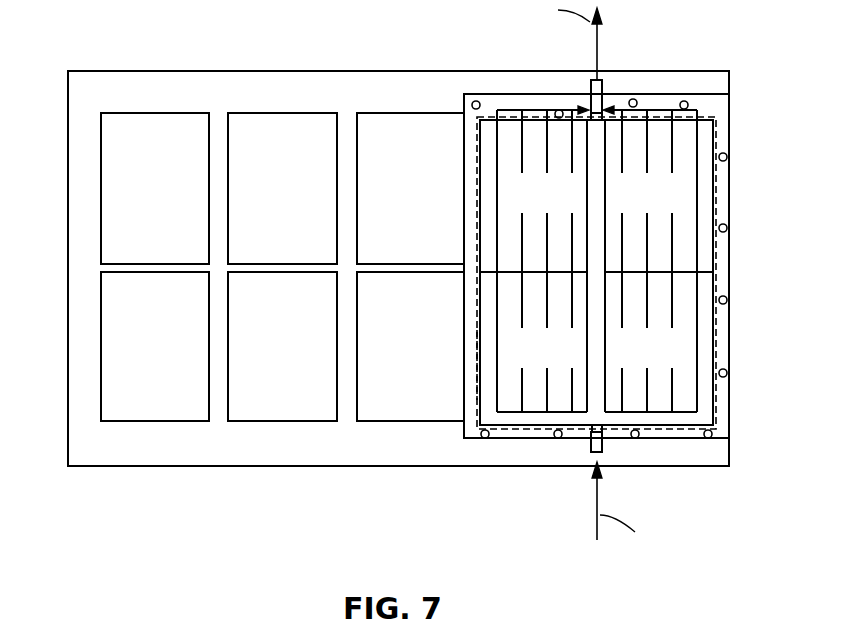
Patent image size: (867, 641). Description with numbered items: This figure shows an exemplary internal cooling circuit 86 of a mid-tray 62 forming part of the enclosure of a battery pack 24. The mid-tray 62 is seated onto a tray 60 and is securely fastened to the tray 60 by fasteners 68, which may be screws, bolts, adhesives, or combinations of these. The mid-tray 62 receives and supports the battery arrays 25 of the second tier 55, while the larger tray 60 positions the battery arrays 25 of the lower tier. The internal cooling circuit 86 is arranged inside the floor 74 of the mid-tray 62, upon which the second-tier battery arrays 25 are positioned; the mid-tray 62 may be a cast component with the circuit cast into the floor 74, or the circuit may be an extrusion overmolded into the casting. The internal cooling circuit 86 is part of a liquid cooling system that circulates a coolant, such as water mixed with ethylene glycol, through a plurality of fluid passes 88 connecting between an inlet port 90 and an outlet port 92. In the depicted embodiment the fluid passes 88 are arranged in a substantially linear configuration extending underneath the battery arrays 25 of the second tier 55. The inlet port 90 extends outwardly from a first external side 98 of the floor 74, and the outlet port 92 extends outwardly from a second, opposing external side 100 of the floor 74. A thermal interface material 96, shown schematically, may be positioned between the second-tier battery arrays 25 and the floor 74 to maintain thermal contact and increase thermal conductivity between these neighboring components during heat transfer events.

The battery pack 24 is at (104, 38).
The tray 60 is at (275, 86).
The battery arrays 25 is at (170, 204).
The mid-tray 62 is at (722, 106).
The second external side 100 is at (703, 94).
The second tier 55 is at (706, 142).
The thermal interface material 96 is at (475, 320).
The floor 74 is at (472, 370).
The internal cooling circuit 86 is at (712, 402).
The first external side 98 is at (730, 440).
The fluid passes 88 is at (560, 263).
The fasteners 68 is at (478, 101).
The outlet port 92 is at (601, 80).
The inlet port 90 is at (594, 456).